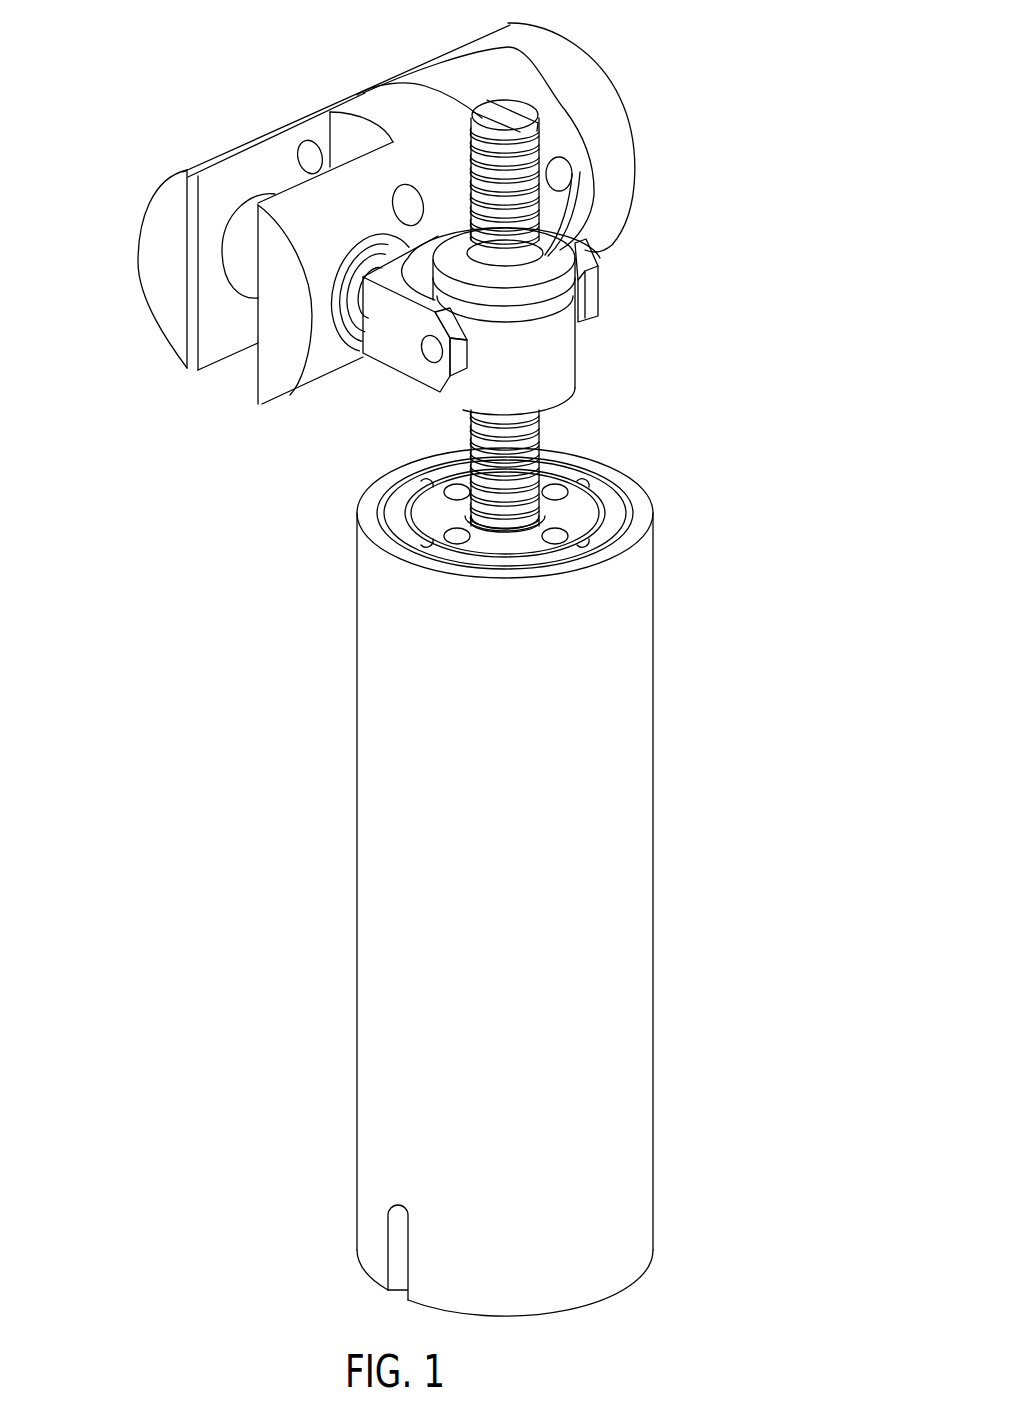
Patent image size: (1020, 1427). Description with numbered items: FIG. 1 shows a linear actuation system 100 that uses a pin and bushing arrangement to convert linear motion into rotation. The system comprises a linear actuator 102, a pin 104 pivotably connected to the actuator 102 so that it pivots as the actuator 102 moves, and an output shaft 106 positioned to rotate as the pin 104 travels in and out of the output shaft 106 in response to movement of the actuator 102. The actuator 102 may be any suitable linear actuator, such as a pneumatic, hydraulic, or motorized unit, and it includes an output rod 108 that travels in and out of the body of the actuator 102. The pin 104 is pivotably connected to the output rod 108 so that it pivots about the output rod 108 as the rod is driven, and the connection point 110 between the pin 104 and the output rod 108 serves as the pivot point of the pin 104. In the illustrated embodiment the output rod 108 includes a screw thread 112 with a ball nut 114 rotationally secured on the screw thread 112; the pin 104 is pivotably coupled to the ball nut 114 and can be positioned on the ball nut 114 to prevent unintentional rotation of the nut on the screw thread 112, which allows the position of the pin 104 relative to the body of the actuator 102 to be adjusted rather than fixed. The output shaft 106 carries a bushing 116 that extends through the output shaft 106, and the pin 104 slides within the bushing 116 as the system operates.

The linear actuation system 100 is at (464, 664).
The actuator 102 is at (630, 968).
The pin 104 is at (460, 349).
The output shaft 106 is at (334, 213).
The output rod 108 is at (585, 312).
The connection point 110 is at (414, 397).
The screw thread 112 is at (567, 316).
The ball nut 114 is at (563, 321).
The bushing 116 is at (276, 228).